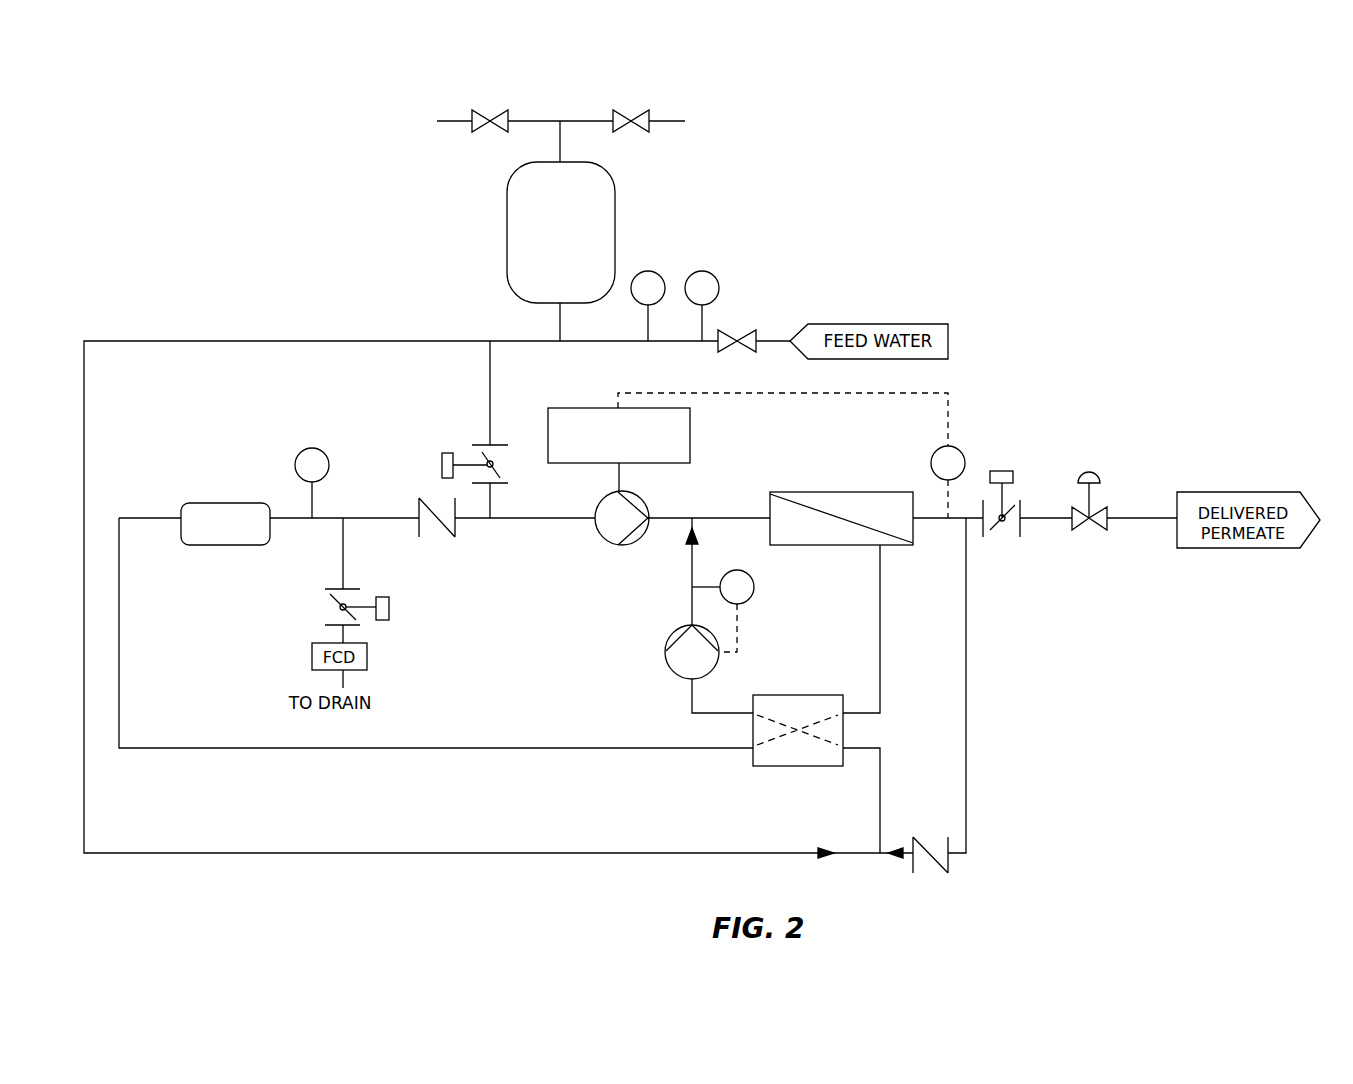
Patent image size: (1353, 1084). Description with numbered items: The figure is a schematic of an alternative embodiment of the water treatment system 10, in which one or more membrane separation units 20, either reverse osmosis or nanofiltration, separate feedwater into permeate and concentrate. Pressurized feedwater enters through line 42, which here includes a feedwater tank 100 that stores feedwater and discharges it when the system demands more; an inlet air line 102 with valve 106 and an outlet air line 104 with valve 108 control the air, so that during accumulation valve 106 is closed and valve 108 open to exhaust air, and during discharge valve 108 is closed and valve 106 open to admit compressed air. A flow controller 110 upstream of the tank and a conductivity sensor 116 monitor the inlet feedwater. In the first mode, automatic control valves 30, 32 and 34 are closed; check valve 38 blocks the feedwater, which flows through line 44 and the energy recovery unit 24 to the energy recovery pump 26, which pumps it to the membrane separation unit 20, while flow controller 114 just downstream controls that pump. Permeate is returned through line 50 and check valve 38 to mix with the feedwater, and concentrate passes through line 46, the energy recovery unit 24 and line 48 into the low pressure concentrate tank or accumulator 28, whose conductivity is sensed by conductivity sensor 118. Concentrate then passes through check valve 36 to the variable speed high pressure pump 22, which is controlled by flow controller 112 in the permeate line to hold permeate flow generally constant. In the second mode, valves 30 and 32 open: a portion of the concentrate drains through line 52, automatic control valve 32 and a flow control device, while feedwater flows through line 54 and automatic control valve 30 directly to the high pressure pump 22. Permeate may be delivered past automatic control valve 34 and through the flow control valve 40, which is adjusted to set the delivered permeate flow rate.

The water treatment system 10 is at (932, 146).
The membrane separation unit 20 is at (830, 548).
The high pressure pump 22 is at (640, 497).
The energy recovery unit 24 is at (797, 768).
The energy recovery pump 26 is at (672, 668).
The low pressure concentrate tank or accumulator 28 is at (232, 503).
The automatic control valve 30 is at (441, 465).
The automatic control valve 32 is at (391, 608).
The automatic control valve 34 is at (1004, 471).
The check valve 36 is at (437, 528).
The check valve 38 is at (925, 863).
The flow control valve 40 is at (1100, 479).
The feedwater line 42 is at (366, 340).
The line 44 is at (878, 805).
The concentrate line 46 is at (878, 604).
The concentrate line 48 is at (490, 747).
The permeate line 50 is at (968, 673).
The drain line 52 is at (339, 570).
The line 54 is at (494, 378).
The feedwater tank 100 is at (616, 213).
The inlet air line 102 is at (450, 120).
The outlet air line 104 is at (666, 120).
The valve 106 is at (497, 116).
The valve 108 is at (624, 116).
The flow controller 110 is at (655, 272).
The flow controller 112 is at (960, 448).
The flow controller 114 is at (754, 592).
The conductivity sensor 116 is at (712, 273).
The conductivity sensor 118 is at (319, 448).